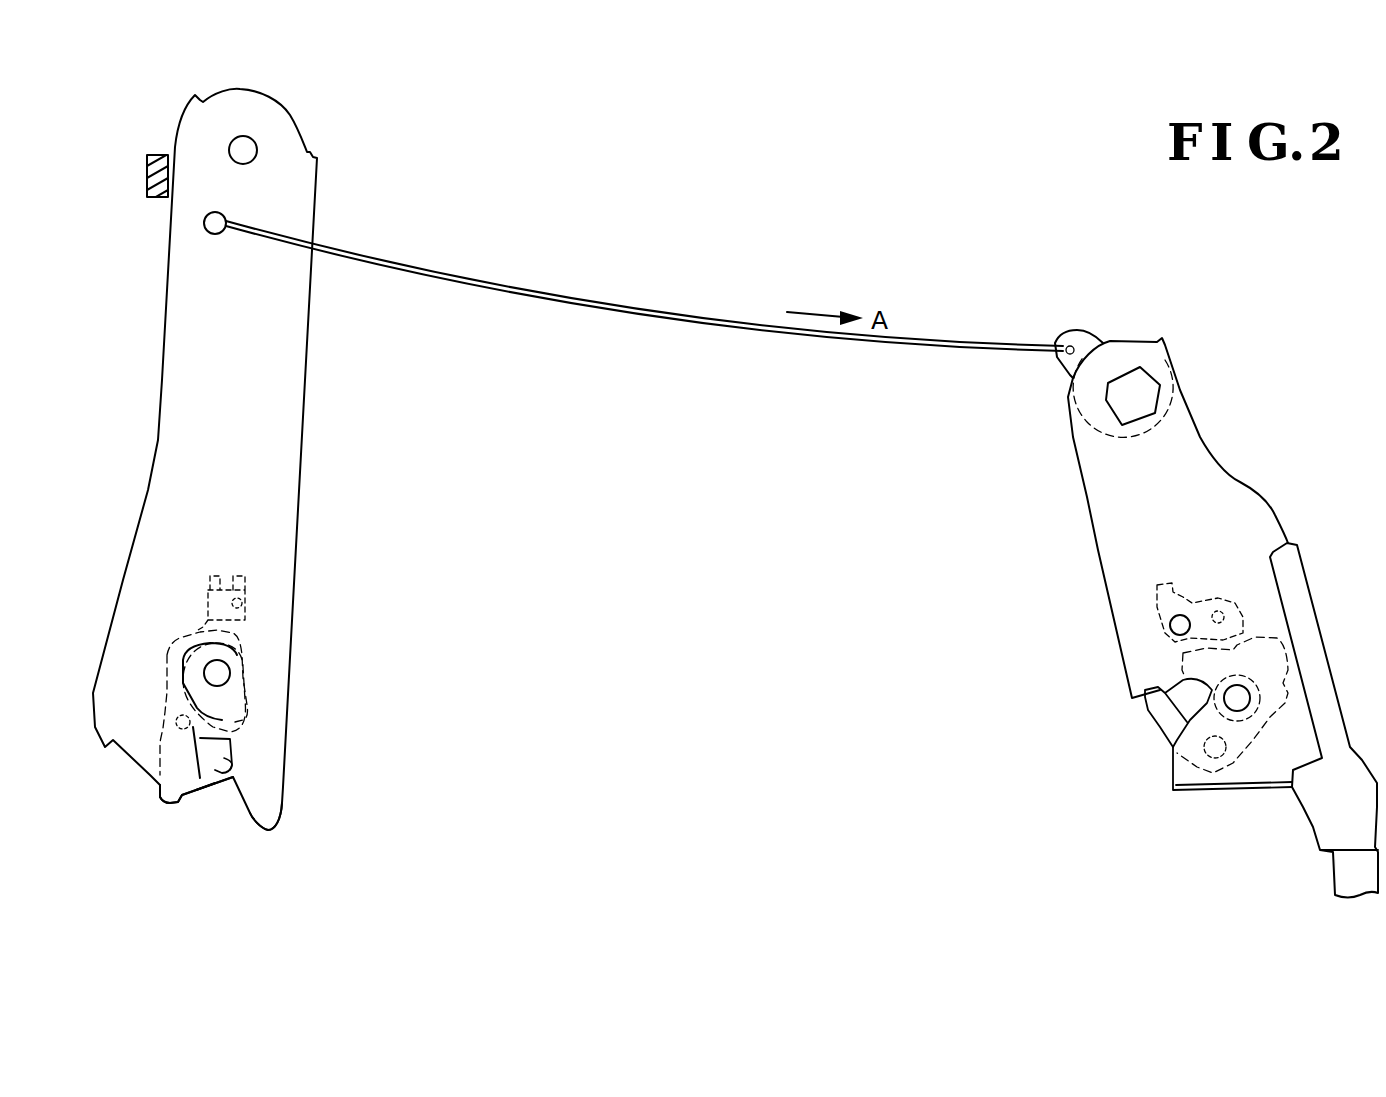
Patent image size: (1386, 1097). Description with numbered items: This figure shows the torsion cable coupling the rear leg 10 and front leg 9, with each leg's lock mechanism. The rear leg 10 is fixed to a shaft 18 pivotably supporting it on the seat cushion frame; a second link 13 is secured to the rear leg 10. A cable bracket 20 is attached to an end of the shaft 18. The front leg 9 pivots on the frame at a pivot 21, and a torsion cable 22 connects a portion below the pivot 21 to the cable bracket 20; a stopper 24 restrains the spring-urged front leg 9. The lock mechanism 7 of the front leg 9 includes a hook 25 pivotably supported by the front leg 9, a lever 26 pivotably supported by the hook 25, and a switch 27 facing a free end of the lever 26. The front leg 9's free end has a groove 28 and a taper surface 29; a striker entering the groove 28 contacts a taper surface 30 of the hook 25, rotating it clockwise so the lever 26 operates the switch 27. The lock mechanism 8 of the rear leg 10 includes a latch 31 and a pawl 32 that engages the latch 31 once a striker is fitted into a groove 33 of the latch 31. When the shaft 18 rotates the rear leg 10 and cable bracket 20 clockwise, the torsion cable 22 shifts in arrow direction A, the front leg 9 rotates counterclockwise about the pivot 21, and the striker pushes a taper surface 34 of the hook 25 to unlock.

The lock mechanism 7 is at (262, 679).
The lock mechanism 8 is at (1162, 657).
The front leg 9 is at (305, 438).
The rear leg 10 is at (1080, 511).
The second link 13 is at (1333, 877).
The shaft 18 is at (1157, 387).
The cable bracket 20 is at (1083, 332).
The pivot 21 is at (257, 148).
The torsion cable 22 is at (703, 324).
The stopper 24 is at (152, 198).
The hook 25 is at (186, 812).
The lever 26 is at (160, 648).
The switch 27 is at (247, 603).
The groove 28 is at (222, 751).
The taper surface 29 is at (250, 823).
The taper surface 30 is at (208, 788).
The latch 31 is at (1165, 742).
The pawl 32 is at (1180, 594).
The groove 33 is at (1183, 703).
The taper surface 34 is at (235, 762).